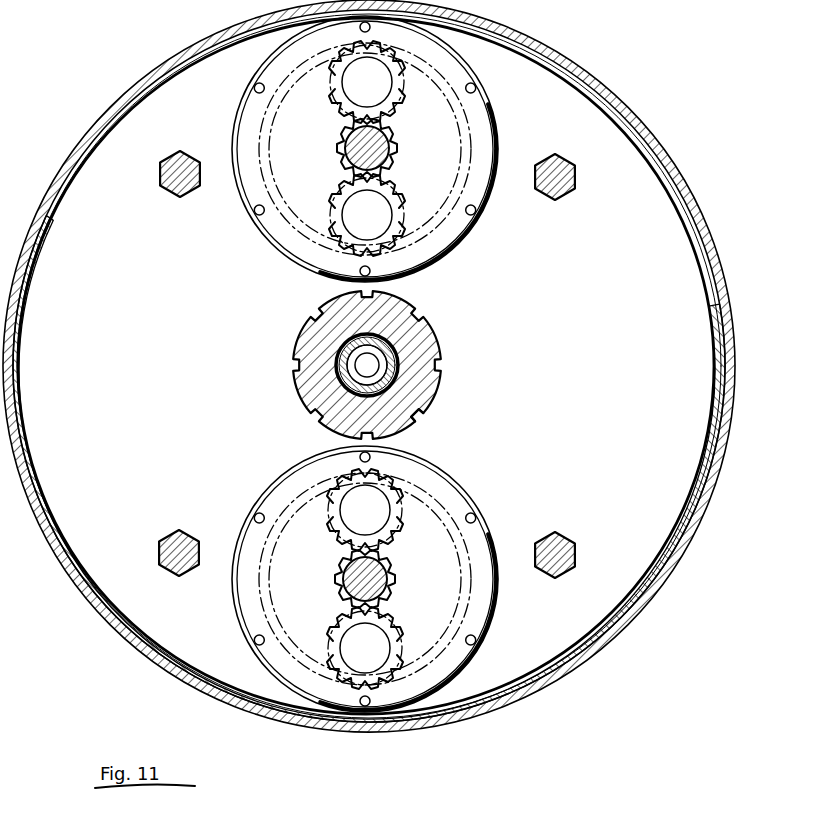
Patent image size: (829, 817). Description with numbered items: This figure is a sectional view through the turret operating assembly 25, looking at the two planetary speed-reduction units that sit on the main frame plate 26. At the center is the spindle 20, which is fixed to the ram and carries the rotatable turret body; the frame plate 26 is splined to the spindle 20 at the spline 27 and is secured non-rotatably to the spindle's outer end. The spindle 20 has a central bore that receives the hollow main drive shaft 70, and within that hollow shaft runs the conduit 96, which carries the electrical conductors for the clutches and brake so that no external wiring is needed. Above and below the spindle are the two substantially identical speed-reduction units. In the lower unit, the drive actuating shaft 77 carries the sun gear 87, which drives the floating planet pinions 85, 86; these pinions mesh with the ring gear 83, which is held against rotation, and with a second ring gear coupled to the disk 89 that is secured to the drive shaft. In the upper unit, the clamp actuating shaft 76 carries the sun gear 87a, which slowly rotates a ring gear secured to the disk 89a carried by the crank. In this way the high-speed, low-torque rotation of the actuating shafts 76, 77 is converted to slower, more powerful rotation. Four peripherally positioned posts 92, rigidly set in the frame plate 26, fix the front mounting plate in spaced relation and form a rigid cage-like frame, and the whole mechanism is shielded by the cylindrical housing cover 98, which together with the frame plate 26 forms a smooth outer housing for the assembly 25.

The turret operating assembly 25 is at (614, 74).
The cylindrical housing cover 98 is at (102, 620).
The main frame plate 26 is at (160, 351).
The disk 89a is at (448, 182).
The sun gear 87a is at (352, 124).
The clamp actuating shaft 76 is at (389, 147).
The spindle 20 is at (426, 328).
The spline 27 is at (416, 420).
The conduit 96 is at (336, 377).
The main drive shaft 70 is at (398, 378).
The ring gear 83 is at (490, 604).
The disk 89 is at (314, 578).
The planet pinion 86 is at (390, 524).
The planet pinion 85 is at (392, 669).
The sun gear 87 is at (392, 554).
The drive actuating shaft 77 is at (386, 581).
The post 92 is at (178, 196).